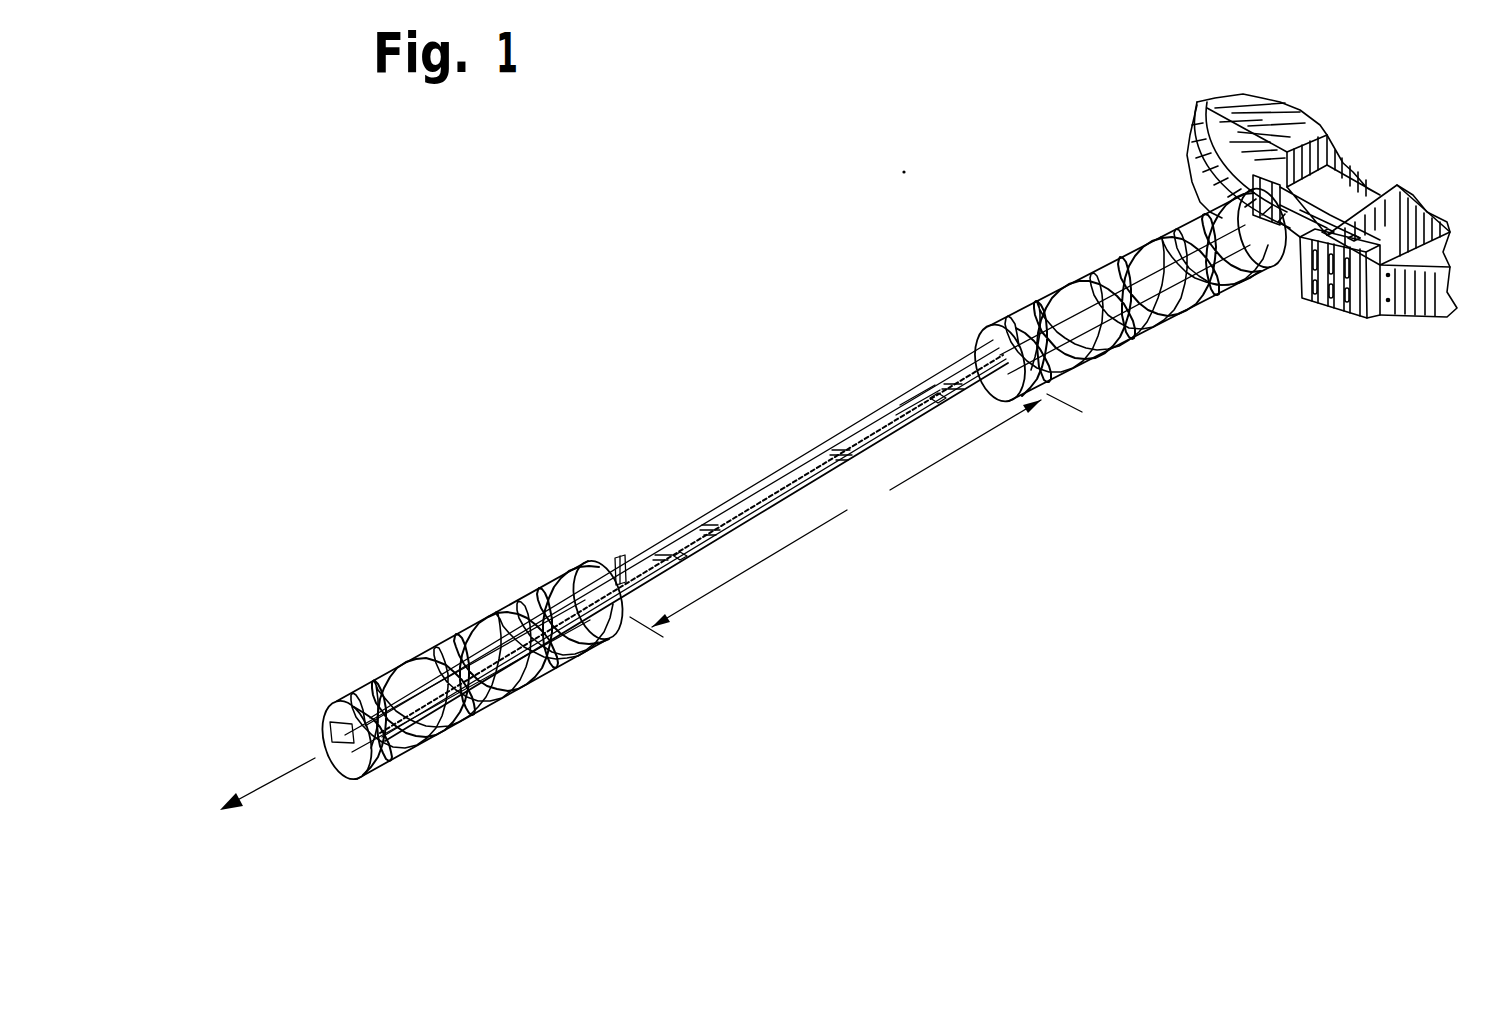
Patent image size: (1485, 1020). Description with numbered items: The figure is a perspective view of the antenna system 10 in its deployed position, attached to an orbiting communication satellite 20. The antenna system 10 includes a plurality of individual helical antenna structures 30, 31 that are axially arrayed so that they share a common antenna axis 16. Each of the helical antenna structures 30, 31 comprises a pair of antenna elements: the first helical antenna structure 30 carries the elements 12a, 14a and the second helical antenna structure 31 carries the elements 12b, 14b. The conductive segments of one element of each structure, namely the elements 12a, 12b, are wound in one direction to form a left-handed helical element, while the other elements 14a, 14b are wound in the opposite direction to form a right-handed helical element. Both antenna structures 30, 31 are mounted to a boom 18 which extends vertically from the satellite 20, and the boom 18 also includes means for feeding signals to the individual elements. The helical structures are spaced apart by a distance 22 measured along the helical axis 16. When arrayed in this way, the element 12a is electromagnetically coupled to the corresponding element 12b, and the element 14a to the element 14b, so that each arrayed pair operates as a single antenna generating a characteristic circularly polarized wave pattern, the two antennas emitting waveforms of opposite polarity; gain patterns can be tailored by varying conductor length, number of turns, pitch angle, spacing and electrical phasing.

The antenna system 10 is at (570, 256).
The antenna element 12a is at (1093, 362).
The antenna element 12b is at (420, 750).
The antenna element 14a is at (1205, 307).
The antenna element 14b is at (547, 670).
The common antenna axis 16 is at (285, 778).
The boom 18 is at (748, 500).
The orbiting communication satellite 20 is at (1385, 312).
The distance 22 is at (897, 497).
The helical antenna structure 30 is at (1117, 246).
The helical antenna structure 31 is at (459, 610).